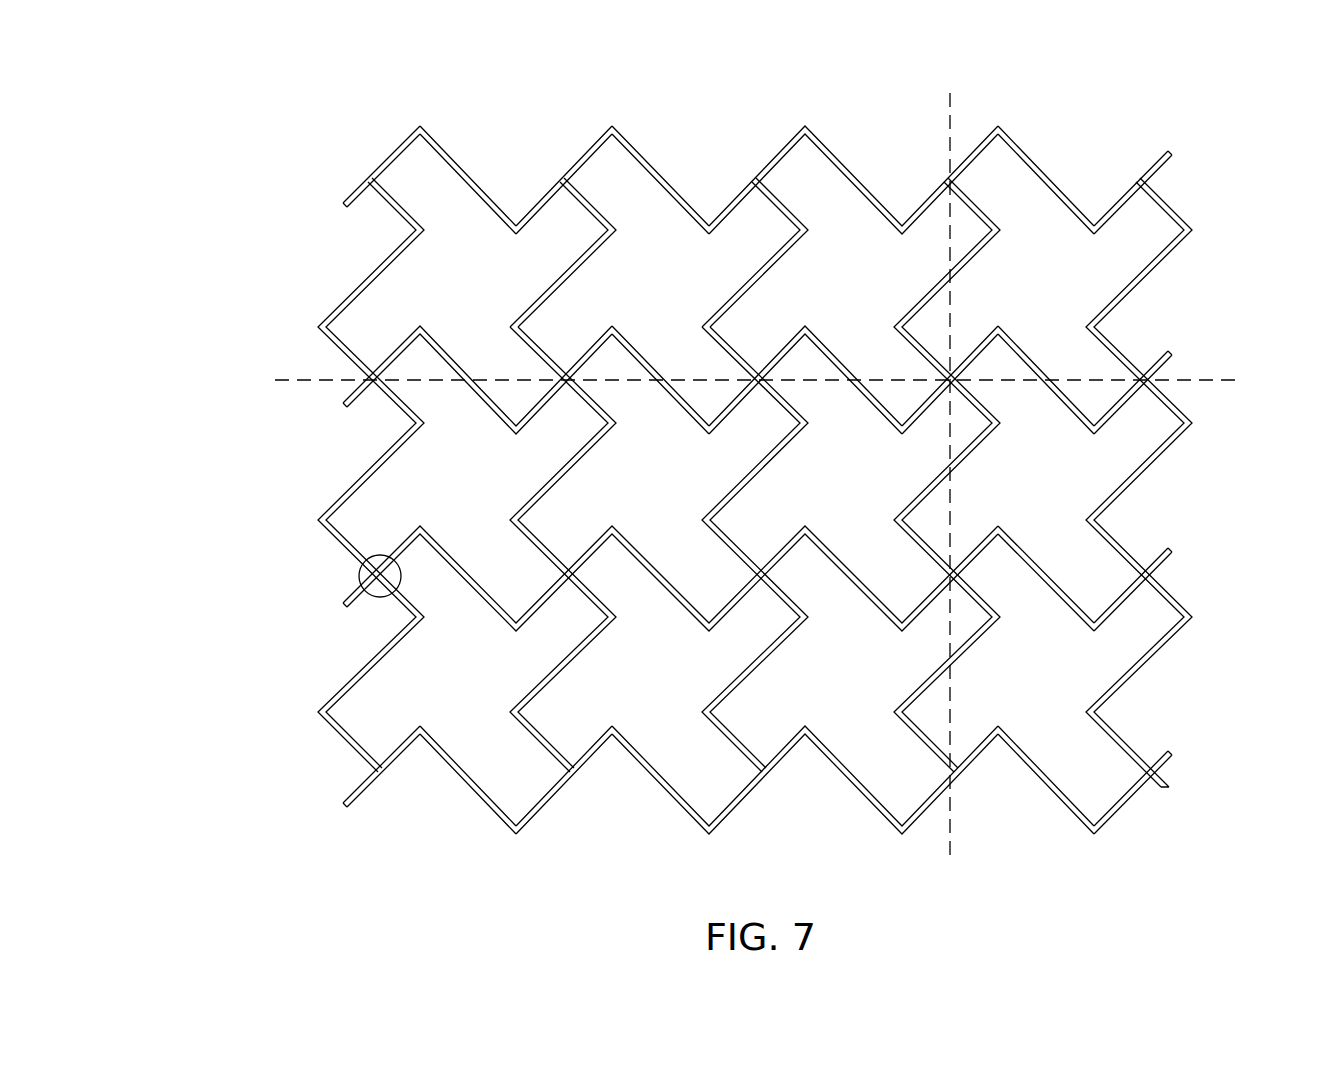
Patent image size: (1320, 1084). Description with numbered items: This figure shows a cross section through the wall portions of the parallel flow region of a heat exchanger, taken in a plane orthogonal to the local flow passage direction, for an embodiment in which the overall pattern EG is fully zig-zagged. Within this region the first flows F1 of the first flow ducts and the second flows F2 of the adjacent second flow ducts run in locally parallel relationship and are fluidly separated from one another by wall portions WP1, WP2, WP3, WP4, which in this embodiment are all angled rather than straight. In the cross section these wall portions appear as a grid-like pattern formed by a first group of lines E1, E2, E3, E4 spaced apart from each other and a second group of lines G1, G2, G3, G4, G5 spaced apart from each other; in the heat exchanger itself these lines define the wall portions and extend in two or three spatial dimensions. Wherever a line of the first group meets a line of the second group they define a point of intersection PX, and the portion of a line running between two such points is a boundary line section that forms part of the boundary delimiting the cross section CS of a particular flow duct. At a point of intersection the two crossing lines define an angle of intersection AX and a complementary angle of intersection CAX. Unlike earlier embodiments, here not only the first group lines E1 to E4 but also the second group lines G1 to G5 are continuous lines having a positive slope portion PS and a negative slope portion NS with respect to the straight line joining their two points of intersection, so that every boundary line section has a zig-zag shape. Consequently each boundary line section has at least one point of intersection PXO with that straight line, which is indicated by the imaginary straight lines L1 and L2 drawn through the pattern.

The electronic device / semiconductor layout EG is at (230, 106).
The negative slope portion NS is at (428, 130).
The positive slope portion PS is at (386, 162).
The wall portion WP1 is at (634, 142).
The wall portion WP2 is at (576, 260).
The wall portion WP3 is at (659, 364).
The wall portion WP4 is at (786, 262).
The imaginary straight line L1 is at (759, 381).
The imaginary straight line L2 is at (950, 475).
The second group line G1 is at (366, 268).
The second group line G2 is at (550, 466).
The second group line G3 is at (730, 565).
The second group line G4 is at (914, 746).
The second group line G5 is at (1182, 600).
The cross section CS is at (390, 507).
The angle of intersection AX is at (372, 572).
The point of intersection PX is at (378, 592).
The complementary angle of intersection CAX is at (395, 583).
The first group line E1 is at (1077, 195).
The first group line E2 is at (1048, 366).
The first group line E3 is at (1070, 590).
The first group line E4 is at (1070, 790).
The point of intersection with the straight line PXO is at (1090, 328).
The first flow F1 is at (875, 693).
The second flow F2 is at (1074, 693).